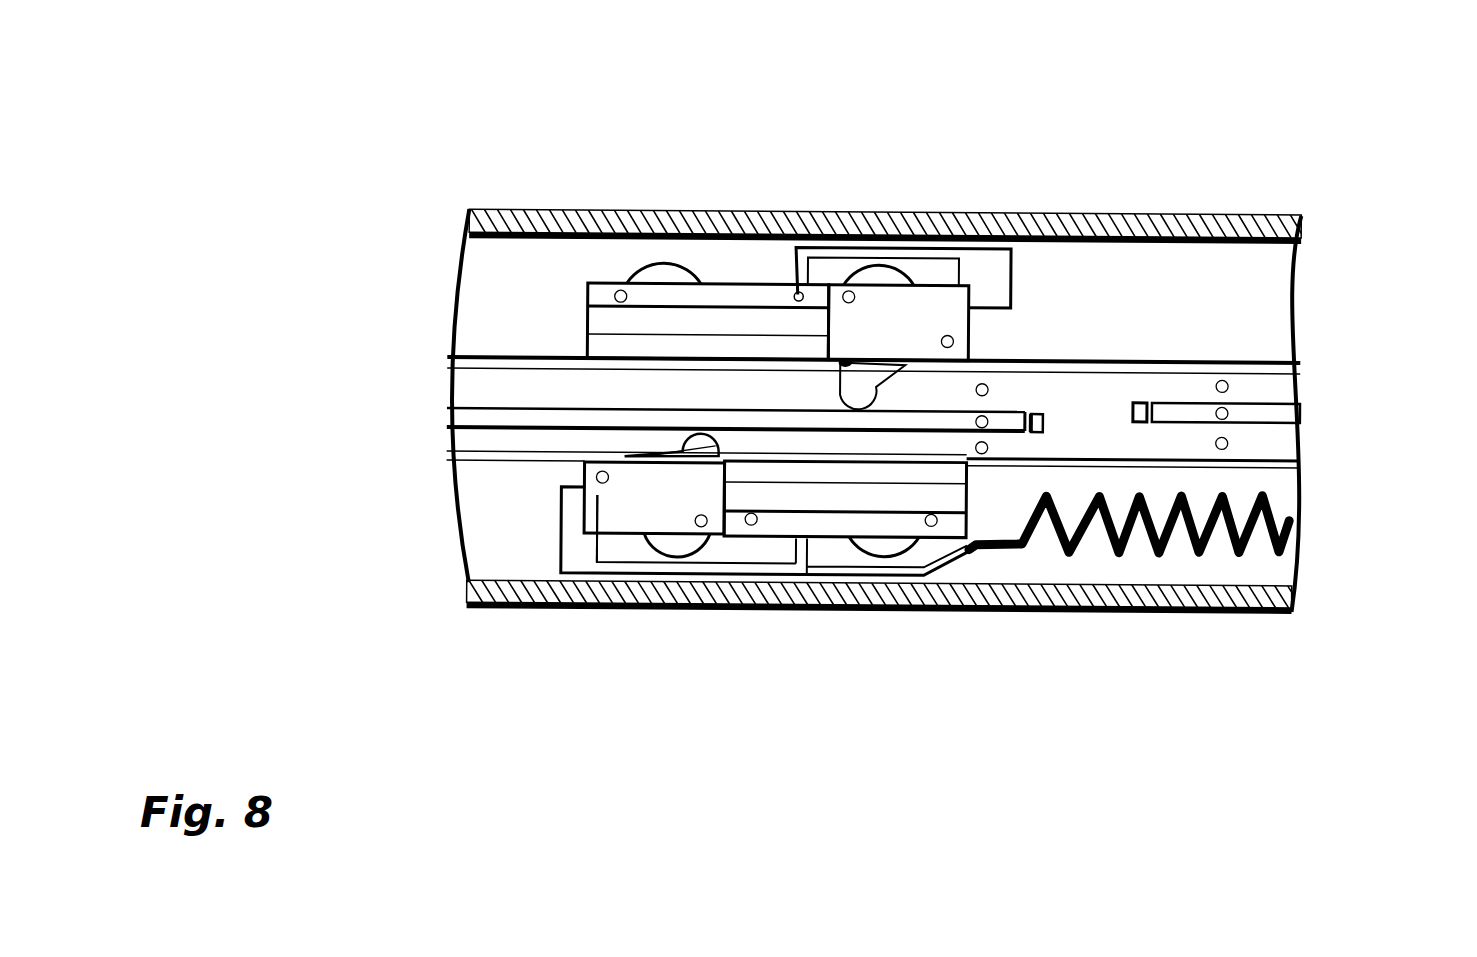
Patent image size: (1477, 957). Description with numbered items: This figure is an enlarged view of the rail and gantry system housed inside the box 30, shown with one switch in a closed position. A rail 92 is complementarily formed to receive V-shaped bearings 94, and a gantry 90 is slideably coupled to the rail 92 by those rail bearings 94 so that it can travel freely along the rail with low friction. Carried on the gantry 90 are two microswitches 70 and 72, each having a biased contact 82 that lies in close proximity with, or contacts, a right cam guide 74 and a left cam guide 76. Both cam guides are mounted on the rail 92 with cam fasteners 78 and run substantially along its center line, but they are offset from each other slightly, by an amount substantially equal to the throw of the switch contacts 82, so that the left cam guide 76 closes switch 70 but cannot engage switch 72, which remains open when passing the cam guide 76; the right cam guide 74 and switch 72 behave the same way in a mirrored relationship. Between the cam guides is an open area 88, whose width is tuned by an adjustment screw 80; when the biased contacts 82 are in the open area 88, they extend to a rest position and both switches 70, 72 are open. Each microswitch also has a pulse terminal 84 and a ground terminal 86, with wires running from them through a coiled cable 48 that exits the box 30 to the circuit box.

The box 30 is at (637, 608).
The coiled cable 48 is at (1167, 557).
The microswitch 70 is at (667, 493).
The microswitch 72 is at (895, 322).
The right cam guide 74 is at (1275, 410).
The left cam guide 76 is at (665, 417).
The cam fasteners 78 is at (1225, 410).
The adjustment screw 80 is at (1043, 433).
The biased contact 82 is at (700, 440).
The pulse terminal 84 is at (995, 246).
The ground terminal 86 is at (805, 260).
The open area 88 is at (1083, 412).
The gantry 90 is at (733, 272).
The rail 92 is at (1108, 370).
The V-shaped bearings 94 is at (660, 272).